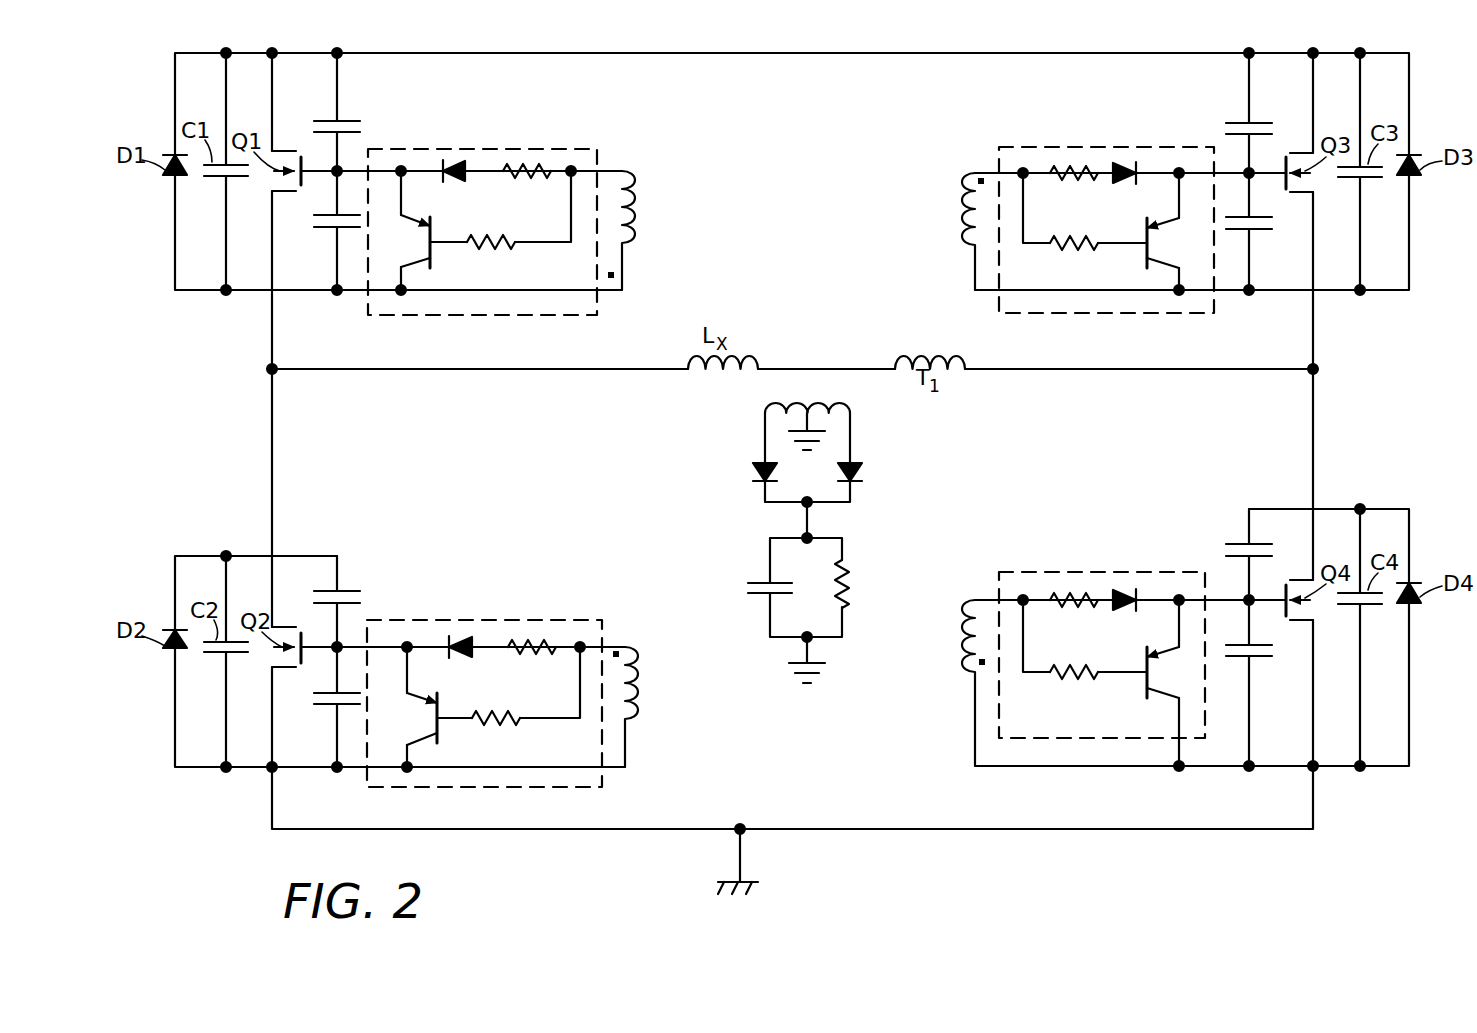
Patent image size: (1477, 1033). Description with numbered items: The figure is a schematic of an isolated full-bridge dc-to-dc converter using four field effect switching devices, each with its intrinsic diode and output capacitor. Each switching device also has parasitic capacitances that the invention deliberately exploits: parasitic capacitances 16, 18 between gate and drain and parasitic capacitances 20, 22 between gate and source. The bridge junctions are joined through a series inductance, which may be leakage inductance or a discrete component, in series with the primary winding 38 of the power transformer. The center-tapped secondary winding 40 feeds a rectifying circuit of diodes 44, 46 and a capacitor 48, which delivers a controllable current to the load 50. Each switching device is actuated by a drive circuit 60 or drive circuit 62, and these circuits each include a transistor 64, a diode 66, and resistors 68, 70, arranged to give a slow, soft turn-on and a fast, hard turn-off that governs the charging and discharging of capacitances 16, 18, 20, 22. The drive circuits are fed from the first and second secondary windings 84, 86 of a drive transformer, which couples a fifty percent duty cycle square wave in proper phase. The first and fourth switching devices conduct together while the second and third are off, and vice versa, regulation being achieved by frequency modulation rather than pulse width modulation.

The parasitic capacitance 16 is at (352, 121).
The parasitic capacitance 18 is at (1243, 123).
The parasitic capacitance 20 is at (322, 229).
The parasitic capacitance 22 is at (1262, 231).
The primary winding 38 is at (935, 355).
The secondary winding 40 is at (795, 408).
The diode 44 is at (754, 478).
The diode 46 is at (862, 478).
The capacitor 48 is at (760, 597).
The load 50 is at (850, 580).
The drive circuit 60 is at (512, 147).
The drive circuit 62 is at (1100, 135).
The transistor 64 is at (427, 247).
The diode 66 is at (457, 183).
The resistor 68 is at (528, 178).
The resistor 70 is at (490, 250).
The first secondary winding 84 is at (640, 210).
The second secondary winding 86 is at (640, 700).